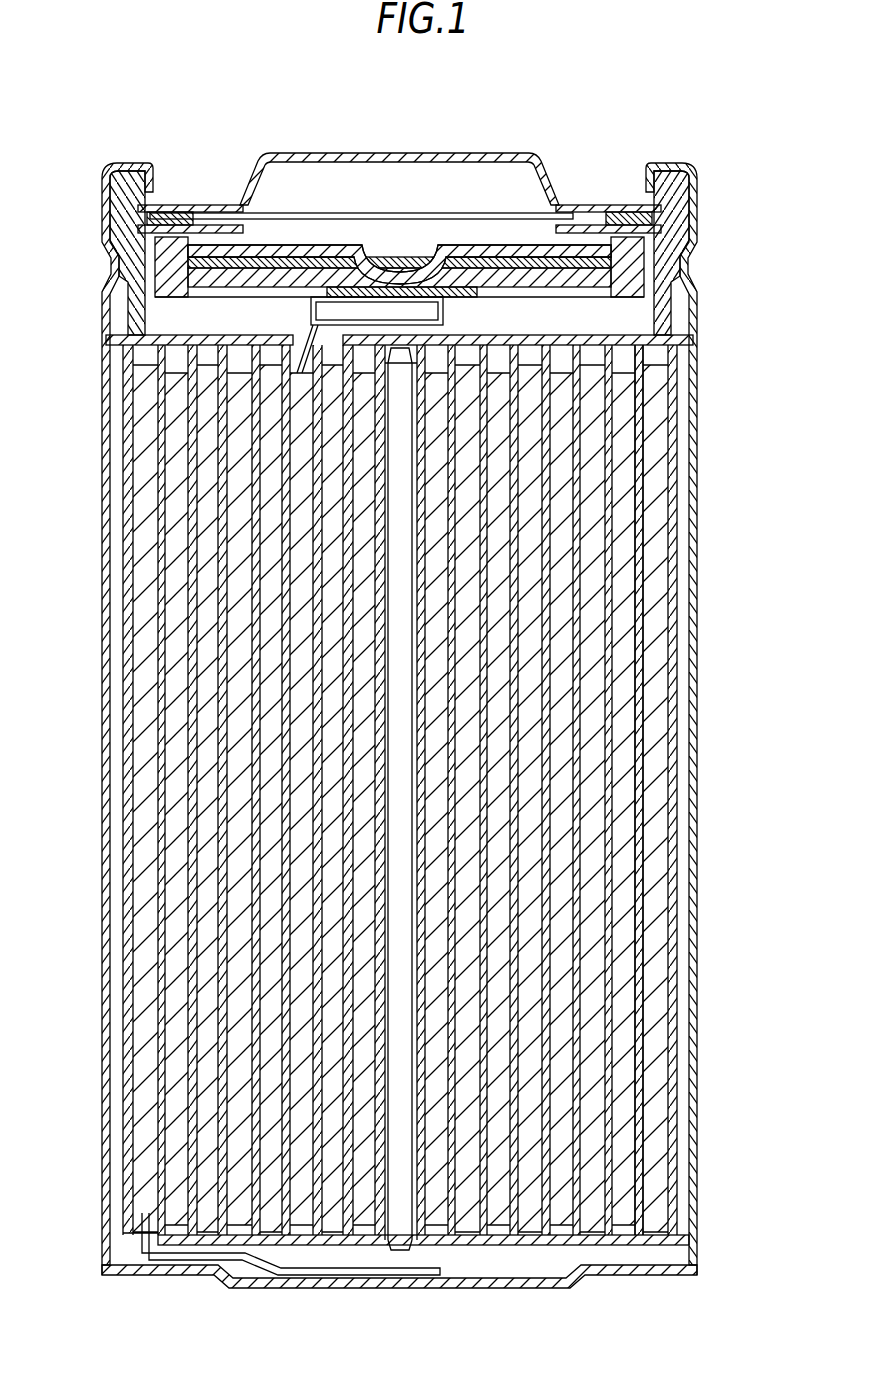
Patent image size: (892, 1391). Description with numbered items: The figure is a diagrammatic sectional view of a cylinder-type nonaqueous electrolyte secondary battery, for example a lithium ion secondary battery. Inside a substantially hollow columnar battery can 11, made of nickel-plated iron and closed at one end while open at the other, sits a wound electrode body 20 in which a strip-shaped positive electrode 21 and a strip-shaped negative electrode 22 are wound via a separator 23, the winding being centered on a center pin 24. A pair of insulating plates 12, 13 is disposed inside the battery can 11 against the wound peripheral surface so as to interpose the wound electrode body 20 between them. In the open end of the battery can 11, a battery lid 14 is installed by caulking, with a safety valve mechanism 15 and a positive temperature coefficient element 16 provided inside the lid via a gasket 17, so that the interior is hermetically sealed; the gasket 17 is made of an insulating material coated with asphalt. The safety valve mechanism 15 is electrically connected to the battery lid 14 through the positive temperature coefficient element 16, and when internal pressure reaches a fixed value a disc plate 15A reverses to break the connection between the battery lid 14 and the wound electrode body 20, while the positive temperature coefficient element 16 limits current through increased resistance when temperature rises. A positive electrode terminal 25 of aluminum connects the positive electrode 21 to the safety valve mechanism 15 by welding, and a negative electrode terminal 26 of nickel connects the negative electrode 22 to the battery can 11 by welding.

The battery can 11 is at (697, 540).
The insulating plate 12 is at (675, 332).
The insulating plate 13 is at (668, 1248).
The battery lid 14 is at (313, 150).
The safety valve mechanism 15 is at (513, 231).
The disc plate 15A is at (473, 245).
The positive temperature coefficient element 16 is at (692, 188).
The gasket 17 is at (680, 243).
The wound electrode body 20 is at (682, 632).
The positive electrode 21 is at (620, 736).
The negative electrode 22 is at (657, 778).
The separator 23 is at (638, 821).
The center pin 24 is at (400, 888).
The positive electrode terminal 25 is at (350, 268).
The negative electrode terminal 26 is at (257, 1272).